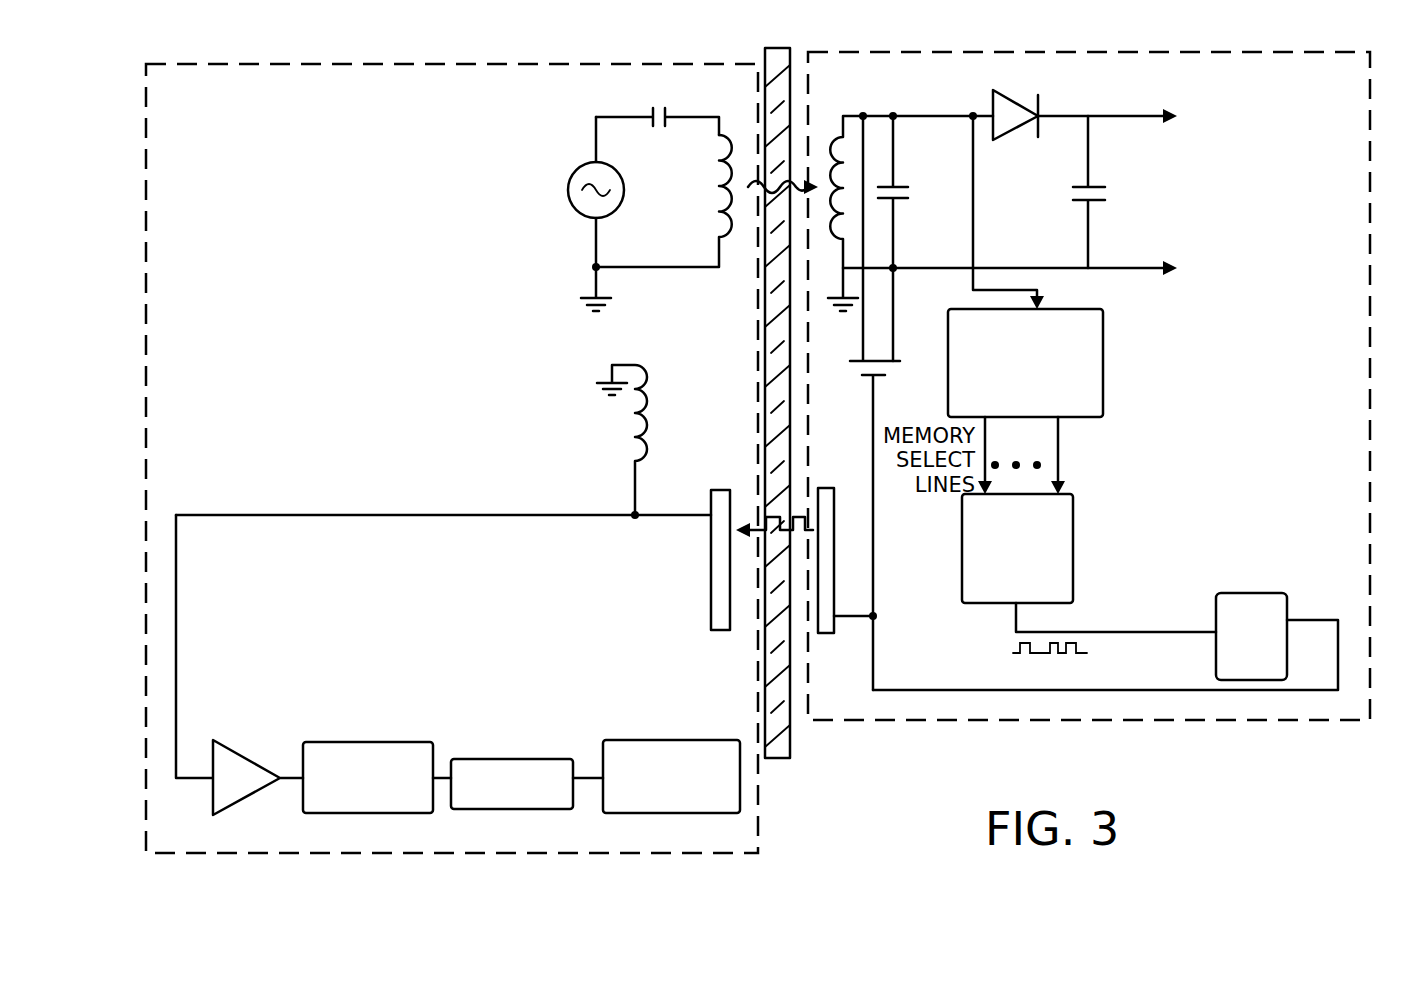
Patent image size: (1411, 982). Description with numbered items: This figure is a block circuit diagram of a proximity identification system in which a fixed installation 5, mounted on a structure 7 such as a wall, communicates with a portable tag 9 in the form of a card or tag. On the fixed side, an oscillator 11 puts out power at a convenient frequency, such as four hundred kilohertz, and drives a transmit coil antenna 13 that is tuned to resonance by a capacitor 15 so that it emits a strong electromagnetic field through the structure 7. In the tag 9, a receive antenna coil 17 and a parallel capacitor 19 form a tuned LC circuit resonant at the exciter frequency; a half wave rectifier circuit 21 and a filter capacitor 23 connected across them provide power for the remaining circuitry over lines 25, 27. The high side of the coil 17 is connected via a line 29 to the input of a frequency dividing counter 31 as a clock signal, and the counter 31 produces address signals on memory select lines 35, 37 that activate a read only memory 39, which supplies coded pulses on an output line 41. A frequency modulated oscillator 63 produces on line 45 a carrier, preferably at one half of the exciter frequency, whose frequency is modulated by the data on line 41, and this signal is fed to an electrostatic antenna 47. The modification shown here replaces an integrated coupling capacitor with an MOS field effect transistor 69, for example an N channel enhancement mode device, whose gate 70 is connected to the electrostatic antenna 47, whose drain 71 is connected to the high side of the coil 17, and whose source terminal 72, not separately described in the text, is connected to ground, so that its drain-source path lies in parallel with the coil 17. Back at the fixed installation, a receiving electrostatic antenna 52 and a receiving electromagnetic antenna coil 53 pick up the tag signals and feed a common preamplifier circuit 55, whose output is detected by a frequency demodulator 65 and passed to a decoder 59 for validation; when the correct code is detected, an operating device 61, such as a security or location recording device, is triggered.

The fixed installation circuitry 5 is at (642, 60).
The structure 7 is at (774, 42).
The tag 9 is at (880, 47).
The oscillator 11 is at (584, 170).
The transmit coil antenna 13 is at (718, 205).
The capacitor 15 is at (662, 110).
The receive antenna coil 17 is at (843, 136).
The capacitor 19 is at (908, 187).
The half wave rectifier circuit 21 is at (1018, 132).
The filter capacitor 23 is at (1110, 187).
The line 25 is at (1148, 112).
The line 27 is at (1133, 270).
The line 29 is at (1040, 293).
The frequency dividing counter 31 is at (1103, 360).
The memory select line 35 is at (987, 440).
The memory select line 37 is at (1060, 440).
The read only memory 39 is at (962, 559).
The output line 41 is at (1016, 625).
The line 45 is at (1318, 622).
The electrostatic antenna 47 is at (818, 598).
The receiving electrostatic antenna 52 is at (711, 586).
The receiving electromagnetic antenna coil 53 is at (650, 366).
The preamplifier circuit 55 is at (238, 752).
The decoder 59 is at (518, 759).
The operating device 61 is at (682, 740).
The frequency modulated oscillator 63 is at (1230, 593).
The frequency demodulator 65 is at (378, 742).
The MOS field effect transistor 69 is at (903, 372).
The gate 70 is at (872, 386).
The drain 71 is at (850, 361).
The capacitor connection 72 is at (894, 320).